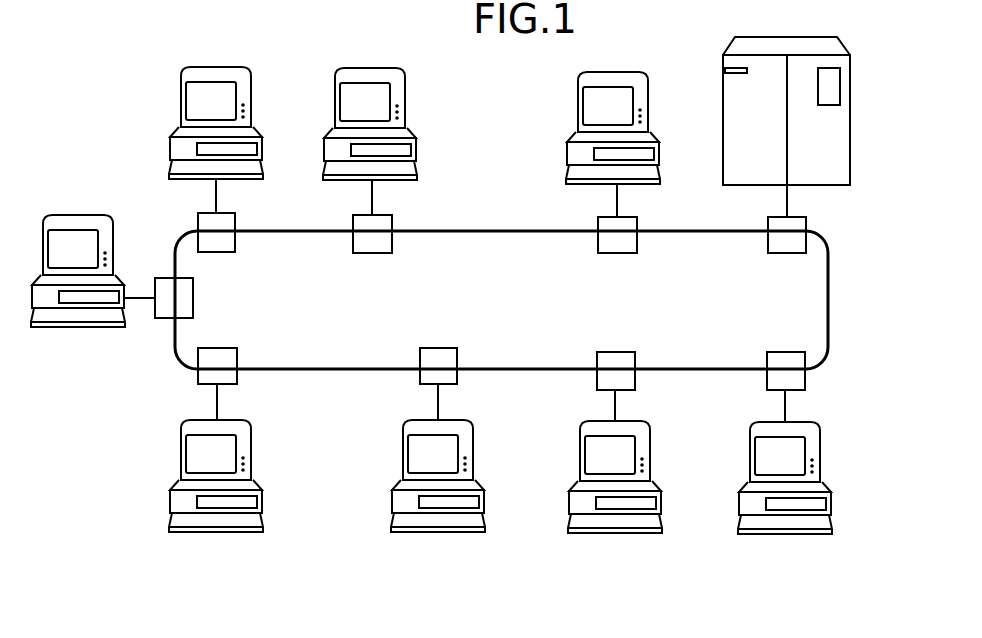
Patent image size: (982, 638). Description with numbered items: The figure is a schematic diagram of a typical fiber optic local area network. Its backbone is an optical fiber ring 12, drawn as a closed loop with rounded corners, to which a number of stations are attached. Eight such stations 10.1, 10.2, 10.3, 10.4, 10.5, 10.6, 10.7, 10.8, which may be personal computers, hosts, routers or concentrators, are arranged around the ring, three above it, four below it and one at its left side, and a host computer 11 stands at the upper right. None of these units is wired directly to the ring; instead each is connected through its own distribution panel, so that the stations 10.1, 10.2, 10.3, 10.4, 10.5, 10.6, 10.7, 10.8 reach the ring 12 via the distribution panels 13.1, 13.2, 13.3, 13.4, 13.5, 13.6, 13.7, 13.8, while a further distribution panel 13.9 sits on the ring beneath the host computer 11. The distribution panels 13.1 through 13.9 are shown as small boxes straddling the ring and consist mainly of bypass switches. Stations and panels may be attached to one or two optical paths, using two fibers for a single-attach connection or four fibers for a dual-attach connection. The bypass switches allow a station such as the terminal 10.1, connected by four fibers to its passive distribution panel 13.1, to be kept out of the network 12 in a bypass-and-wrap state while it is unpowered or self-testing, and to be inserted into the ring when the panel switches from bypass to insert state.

The station 10.1 is at (813, 523).
The station 10.2 is at (650, 522).
The station 10.3 is at (472, 521).
The station 10.4 is at (246, 521).
The station 10.5 is at (92, 320).
The station 10.6 is at (170, 175).
The station 10.7 is at (416, 172).
The station 10.8 is at (587, 178).
The host computer 11 is at (733, 92).
The optical fiber ring 12 is at (828, 298).
The distribution panel 13.1 is at (793, 383).
The distribution panel 13.2 is at (630, 380).
The distribution panel 13.3 is at (455, 378).
The distribution panel 13.4 is at (230, 375).
The distribution panel 13.5 is at (190, 300).
The distribution panel 13.6 is at (208, 220).
The distribution panel 13.7 is at (367, 222).
The distribution panel 13.8 is at (605, 225).
The distribution panel 13.9 is at (783, 225).